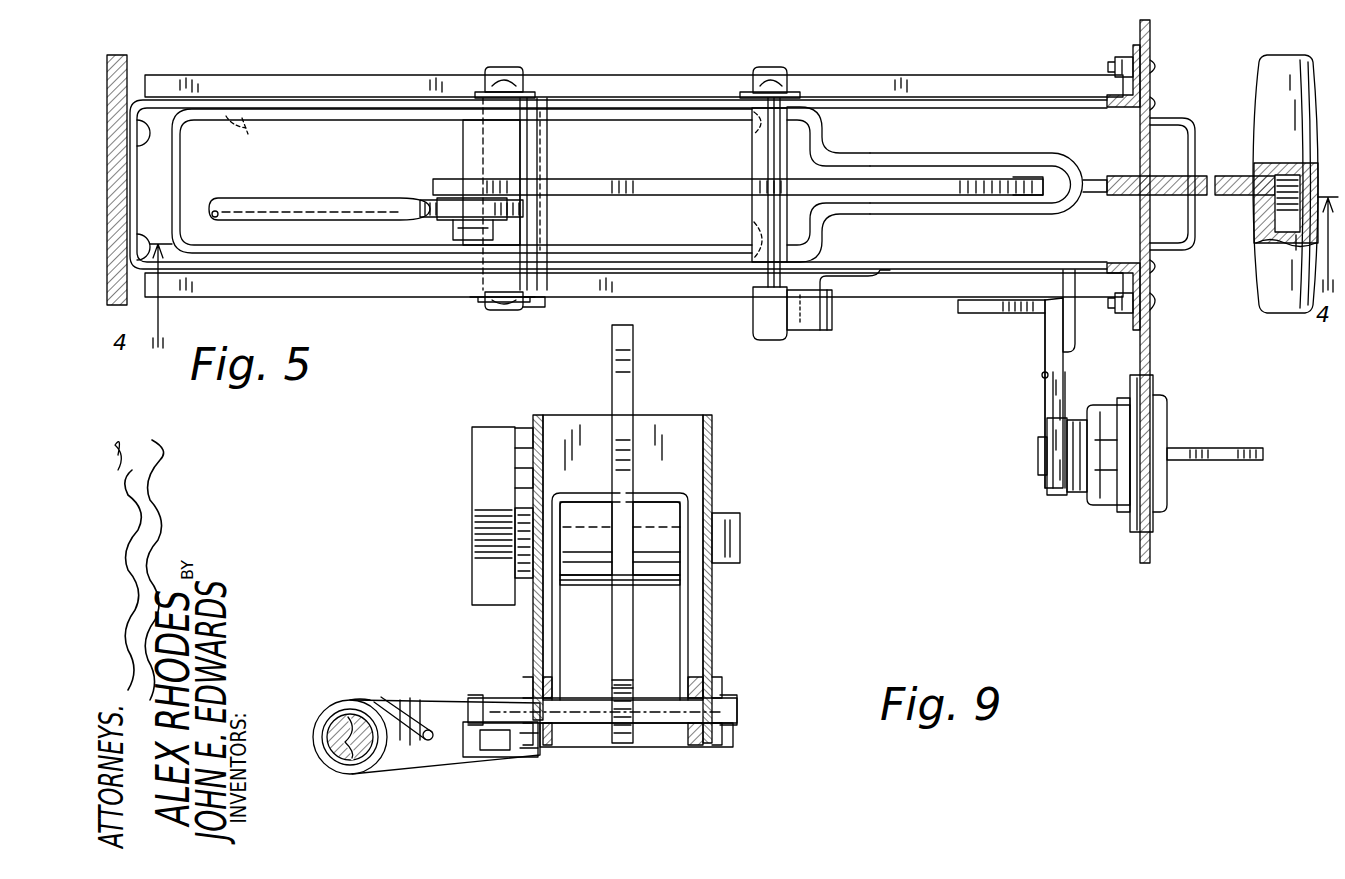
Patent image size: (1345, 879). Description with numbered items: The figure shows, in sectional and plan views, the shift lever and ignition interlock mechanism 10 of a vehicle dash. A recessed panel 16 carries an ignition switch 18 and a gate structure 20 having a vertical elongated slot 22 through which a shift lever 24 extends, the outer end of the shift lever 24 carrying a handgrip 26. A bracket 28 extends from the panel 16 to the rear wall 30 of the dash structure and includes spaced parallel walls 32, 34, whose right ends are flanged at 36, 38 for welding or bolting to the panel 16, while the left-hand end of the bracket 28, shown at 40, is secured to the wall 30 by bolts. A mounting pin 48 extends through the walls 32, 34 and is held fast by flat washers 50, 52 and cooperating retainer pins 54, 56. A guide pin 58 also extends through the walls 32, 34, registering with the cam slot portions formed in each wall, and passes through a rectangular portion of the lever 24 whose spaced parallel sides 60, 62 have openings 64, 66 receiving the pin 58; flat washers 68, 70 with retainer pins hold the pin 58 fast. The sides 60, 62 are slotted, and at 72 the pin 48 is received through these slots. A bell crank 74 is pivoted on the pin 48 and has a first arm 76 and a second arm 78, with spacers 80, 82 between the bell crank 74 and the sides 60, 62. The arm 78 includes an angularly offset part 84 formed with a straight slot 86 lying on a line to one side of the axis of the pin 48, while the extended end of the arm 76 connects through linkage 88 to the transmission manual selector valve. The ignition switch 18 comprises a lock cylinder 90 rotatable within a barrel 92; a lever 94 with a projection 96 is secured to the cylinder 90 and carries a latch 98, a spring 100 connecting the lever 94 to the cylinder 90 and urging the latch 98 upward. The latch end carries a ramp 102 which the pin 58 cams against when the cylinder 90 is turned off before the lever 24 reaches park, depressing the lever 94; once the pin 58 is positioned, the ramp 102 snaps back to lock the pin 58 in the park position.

In FIG. 5, the adjusting assembly 10 is at (1166, 45).
In FIG. 5, the recessed panel 16 is at (1150, 352).
In FIG. 5, the ignition switch 18 is at (1181, 405).
In FIG. 9, the ignition switch 18 is at (424, 785).
In FIG. 5, the gate structure 20 is at (1204, 122).
In FIG. 5, the vertical elongated slot 22 is at (1195, 177).
In FIG. 5, the shift lever 24 is at (1240, 197).
In FIG. 5, the handgrip 26 is at (1270, 64).
In FIG. 5, the bracket 28 is at (894, 93).
In FIG. 9, the bracket 28 is at (726, 416).
In FIG. 5, the rear wall 30 is at (130, 66).
In FIG. 5, the wall 32 is at (962, 78).
In FIG. 9, the wall 32 is at (712, 450).
In FIG. 5, the wall 34 is at (932, 275).
In FIG. 9, the wall 34 is at (535, 418).
In FIG. 5, the flange 36 is at (1128, 62).
In FIG. 5, the flange 38 is at (1130, 327).
In FIG. 5, the left-hand end of the bracket 40 is at (145, 138).
In FIG. 9, the left-hand end of the bracket 40 is at (660, 422).
In FIG. 5, the mounting pin 48 is at (478, 298).
In FIG. 9, the mounting pin 48 is at (740, 527).
In FIG. 5, the flat washer 50 is at (540, 297).
In FIG. 9, the flat washer 50 is at (515, 515).
In FIG. 5, the flat washer 52 is at (535, 92).
In FIG. 9, the flat washer 52 is at (738, 517).
In FIG. 5, the retainer pin 54 is at (500, 307).
In FIG. 9, the retainer pin 54 is at (515, 530).
In FIG. 5, the retainer pin 56 is at (500, 80).
In FIG. 9, the retainer pin 56 is at (748, 542).
In FIG. 5, the guide pin 58 is at (752, 159).
In FIG. 9, the guide pin 58 is at (600, 725).
In FIG. 5, the side 60 is at (640, 262).
In FIG. 9, the side 60 is at (552, 627).
In FIG. 5, the side 62 is at (612, 118).
In FIG. 9, the side 62 is at (690, 602).
In FIG. 5, the opening 64 is at (755, 230).
In FIG. 9, the opening 64 is at (553, 707).
In FIG. 5, the opening 66 is at (753, 131).
In FIG. 9, the opening 66 is at (678, 732).
In FIG. 5, the flat washer 68 is at (755, 297).
In FIG. 9, the flat washer 68 is at (528, 680).
In FIG. 5, the flat washer 70 is at (785, 80).
In FIG. 9, the flat washer 70 is at (718, 692).
In FIG. 5, the slots 72 is at (246, 143).
In FIG. 5, the bell crank 74 is at (536, 184).
In FIG. 9, the bell crank 74 is at (598, 370).
In FIG. 5, the first arm 76 is at (440, 181).
In FIG. 9, the first arm 76 is at (612, 344).
In FIG. 5, the second arm 78 is at (650, 187).
In FIG. 9, the second arm 78 is at (640, 652).
In FIG. 5, the spacer 80 is at (545, 220).
In FIG. 9, the spacer 80 is at (580, 512).
In FIG. 5, the spacer 82 is at (463, 143).
In FIG. 9, the spacer 82 is at (655, 512).
In FIG. 9, the angularly offset part 84 is at (636, 690).
In FIG. 5, the straight slot 86 is at (1012, 181).
In FIG. 9, the straight slot 86 is at (650, 742).
In FIG. 5, the linkage 88 is at (330, 200).
In FIG. 5, the lock cylinder 90 is at (1072, 496).
In FIG. 9, the lock cylinder 90 is at (328, 767).
In FIG. 5, the barrel 92 is at (1100, 506).
In FIG. 5, the lever 94 is at (1052, 382).
In FIG. 9, the lever 94 is at (340, 702).
In FIG. 5, the projection 96 is at (1040, 318).
In FIG. 9, the latch 98 is at (498, 762).
In FIG. 5, the spring 100 is at (1052, 394).
In FIG. 9, the spring 100 is at (390, 707).
In FIG. 5, the ramp 102 is at (972, 313).